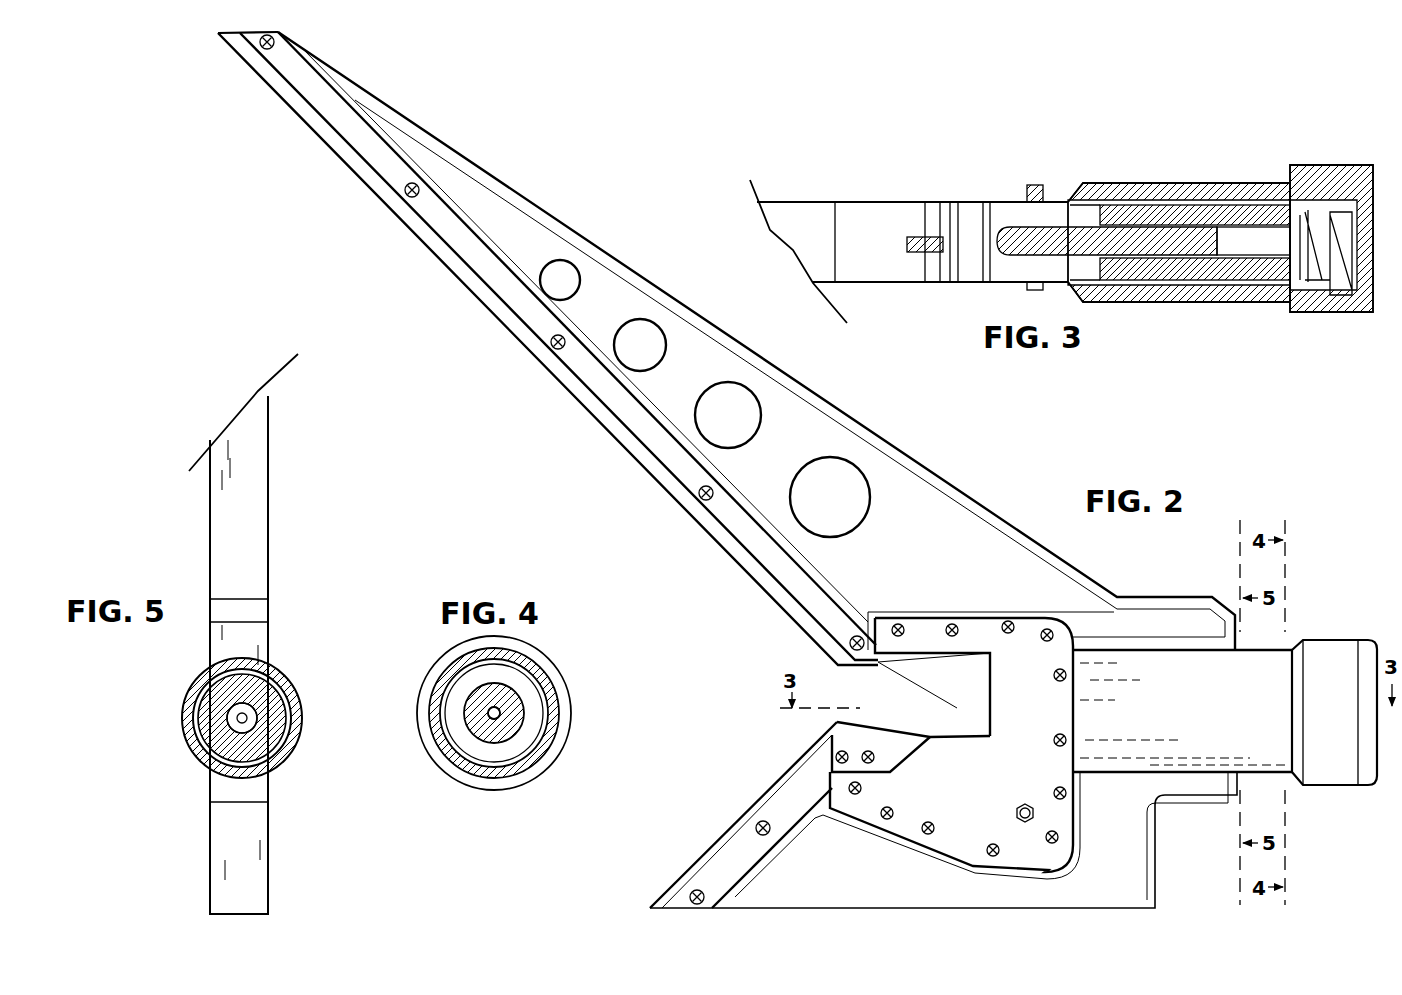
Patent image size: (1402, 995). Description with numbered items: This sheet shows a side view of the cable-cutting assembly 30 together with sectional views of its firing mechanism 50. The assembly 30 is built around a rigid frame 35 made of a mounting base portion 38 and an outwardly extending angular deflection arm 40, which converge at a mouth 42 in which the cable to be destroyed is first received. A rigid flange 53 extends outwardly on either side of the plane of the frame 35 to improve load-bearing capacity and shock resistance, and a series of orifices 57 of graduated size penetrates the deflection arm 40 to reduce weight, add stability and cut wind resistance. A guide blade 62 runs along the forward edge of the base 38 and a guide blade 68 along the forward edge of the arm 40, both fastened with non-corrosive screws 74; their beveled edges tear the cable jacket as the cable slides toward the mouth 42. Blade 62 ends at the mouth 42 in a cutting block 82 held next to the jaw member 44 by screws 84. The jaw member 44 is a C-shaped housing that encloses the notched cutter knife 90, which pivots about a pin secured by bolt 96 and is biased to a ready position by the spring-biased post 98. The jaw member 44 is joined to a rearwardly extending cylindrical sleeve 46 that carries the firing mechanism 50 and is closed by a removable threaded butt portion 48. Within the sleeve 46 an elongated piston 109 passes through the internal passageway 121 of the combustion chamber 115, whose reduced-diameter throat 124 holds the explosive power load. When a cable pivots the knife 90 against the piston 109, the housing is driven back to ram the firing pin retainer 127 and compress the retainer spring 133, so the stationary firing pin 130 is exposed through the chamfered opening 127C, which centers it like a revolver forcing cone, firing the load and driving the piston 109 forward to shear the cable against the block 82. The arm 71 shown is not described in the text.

In FIG. 2, the assembly 30 is at (990, 455).
In FIG. 2, the rigid frame 35 is at (704, 468).
In FIG. 2, the mounting base portion 38 is at (1130, 862).
In FIG. 2, the deflection arm 40 is at (880, 470).
In FIG. 2, the mouth 42 is at (867, 682).
In FIG. 2, the jaw member 44 is at (951, 745).
In FIG. 2, the cylindrical sleeve 46 is at (1182, 711).
In FIG. 3, the cylindrical sleeve 46 is at (1185, 192).
In FIG. 4, the cylindrical sleeve 46 is at (546, 736).
In FIG. 5, the cylindrical sleeve 46 is at (298, 705).
In FIG. 2, the butt portion 48 is at (1334, 712).
In FIG. 3, the butt portion 48 is at (1312, 175).
In FIG. 4, the butt portion 48 is at (533, 769).
In FIG. 3, the firing mechanism 50 is at (1166, 162).
In FIG. 2, the rigid flange 53 is at (702, 313).
In FIG. 2, the orifices 57 is at (705, 398).
In FIG. 2, the guide blade 62 is at (778, 782).
In FIG. 2, the guide blade 68 is at (432, 231).
In FIG. 2, the arm 71 is at (446, 307).
In FIG. 2, the screws 74 is at (260, 45).
In FIG. 2, the cutting block 82 is at (871, 756).
In FIG. 2, the screws 84 is at (845, 756).
In FIG. 2, the cutter knife 90 is at (970, 710).
In FIG. 2, the bolt 96 is at (1030, 822).
In FIG. 3, the spring-biased post 98 is at (1078, 185).
In FIG. 3, the piston 109 is at (1125, 242).
In FIG. 3, the combustion chamber 115 is at (1258, 275).
In FIG. 5, the combustion chamber 115 is at (268, 728).
In FIG. 3, the passageway 121 is at (1056, 264).
In FIG. 3, the throat 124 is at (1253, 241).
In FIG. 5, the throat 124 is at (228, 716).
In FIG. 3, the firing pin retainer 127 is at (1310, 280).
In FIG. 4, the firing pin retainer 127 is at (457, 750).
In FIG. 4, the chamfered opening 127C is at (515, 718).
In FIG. 4, the firing pin 130 is at (492, 748).
In FIG. 3, the retainer spring 133 is at (1322, 285).